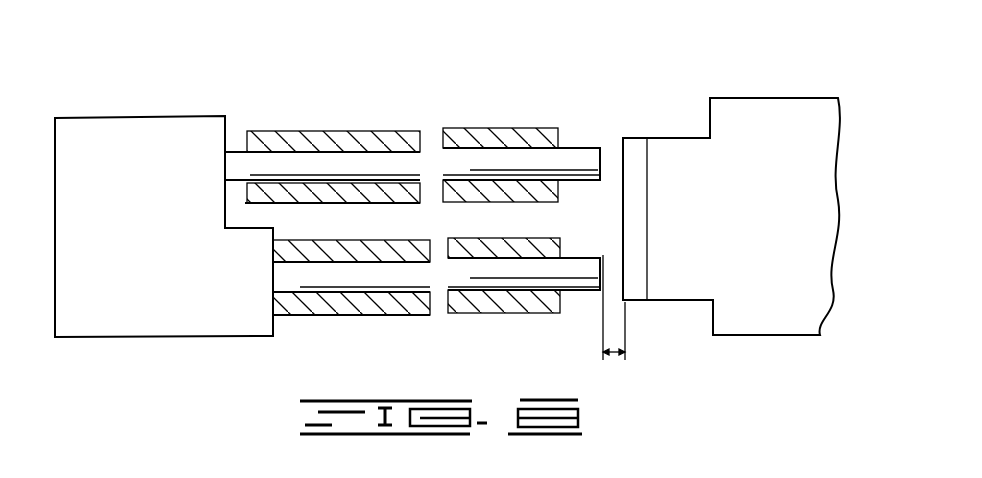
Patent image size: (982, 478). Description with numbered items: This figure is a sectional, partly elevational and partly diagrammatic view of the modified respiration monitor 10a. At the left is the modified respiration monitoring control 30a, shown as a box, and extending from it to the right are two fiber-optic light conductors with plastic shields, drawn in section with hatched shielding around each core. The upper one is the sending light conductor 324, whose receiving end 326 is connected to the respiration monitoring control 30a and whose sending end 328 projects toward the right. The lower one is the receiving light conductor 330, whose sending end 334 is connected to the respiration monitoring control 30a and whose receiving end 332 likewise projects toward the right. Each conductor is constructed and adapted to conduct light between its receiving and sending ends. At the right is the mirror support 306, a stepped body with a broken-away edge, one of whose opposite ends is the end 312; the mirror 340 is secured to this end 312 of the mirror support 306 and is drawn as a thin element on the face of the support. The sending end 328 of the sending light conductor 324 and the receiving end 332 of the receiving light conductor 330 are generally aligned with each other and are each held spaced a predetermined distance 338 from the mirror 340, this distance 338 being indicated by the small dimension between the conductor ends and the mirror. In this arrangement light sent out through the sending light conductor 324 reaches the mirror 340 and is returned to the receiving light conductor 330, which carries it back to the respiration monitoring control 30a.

The modified respiration monitor 10a is at (578, 107).
The modified respiration monitoring control 30a is at (150, 339).
The mirror support 306 is at (760, 315).
The end of mirror support 312 is at (648, 228).
The sending light conductor 324 is at (296, 132).
The receiving end of sending light conductor 326 is at (222, 152).
The sending end of sending light conductor 328 is at (601, 148).
The receiving light conductor 330 is at (385, 293).
The receiving end of receiving light conductor 332 is at (600, 280).
The sending end of receiving light conductor 334 is at (281, 283).
The distance 338 is at (614, 356).
The mirror 340 is at (640, 206).